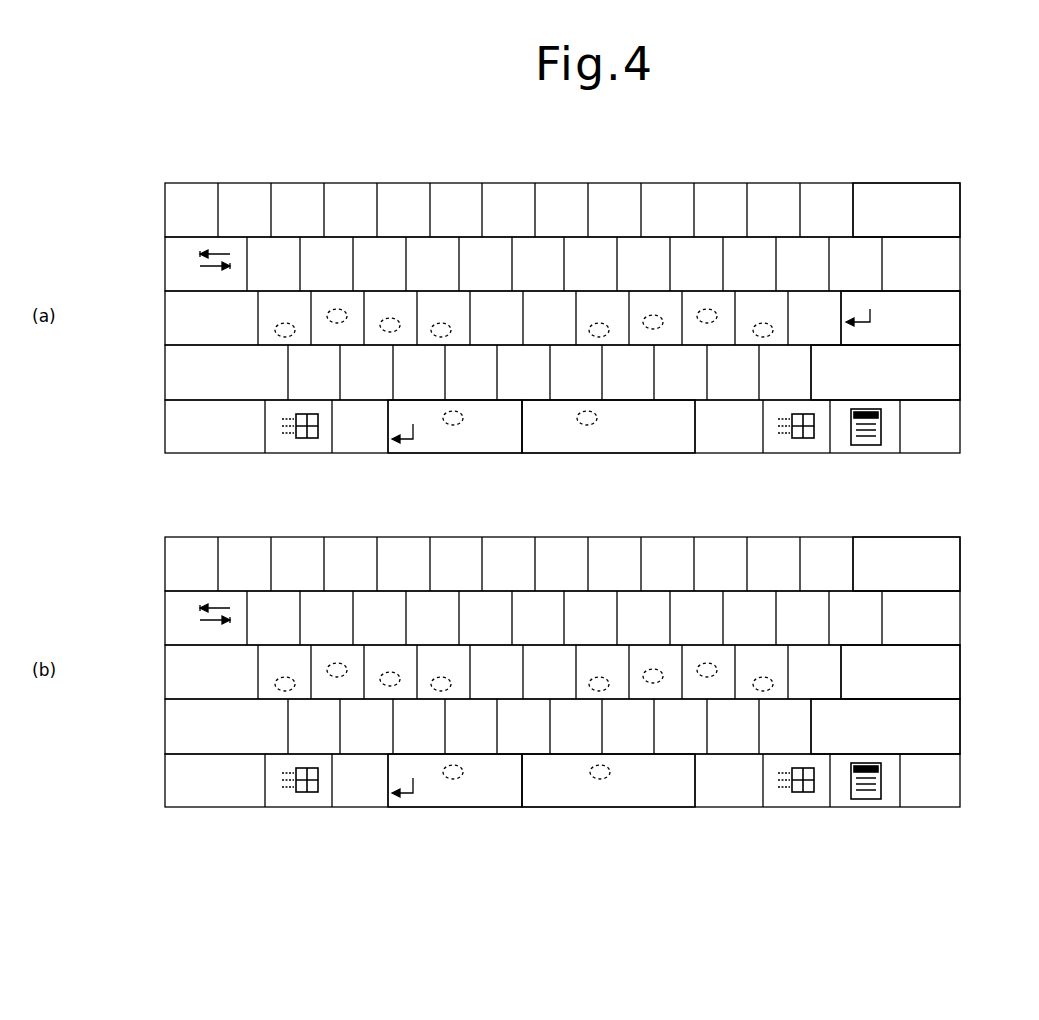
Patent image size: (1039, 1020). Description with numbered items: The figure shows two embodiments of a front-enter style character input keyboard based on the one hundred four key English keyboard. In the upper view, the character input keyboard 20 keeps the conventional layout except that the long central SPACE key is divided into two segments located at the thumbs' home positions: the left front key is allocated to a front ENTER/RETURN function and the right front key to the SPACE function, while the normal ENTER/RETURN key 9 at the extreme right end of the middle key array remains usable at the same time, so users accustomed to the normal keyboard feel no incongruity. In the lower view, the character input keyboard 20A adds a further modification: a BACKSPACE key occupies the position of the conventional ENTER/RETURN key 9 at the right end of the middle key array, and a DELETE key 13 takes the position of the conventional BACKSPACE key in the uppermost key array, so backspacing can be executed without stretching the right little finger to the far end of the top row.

The character input keyboard 20 is at (543, 175).
The character input keyboard 20A is at (540, 531).
The DELETE key 13 is at (932, 553).
The ENTER/RETURN key 9 is at (922, 308).